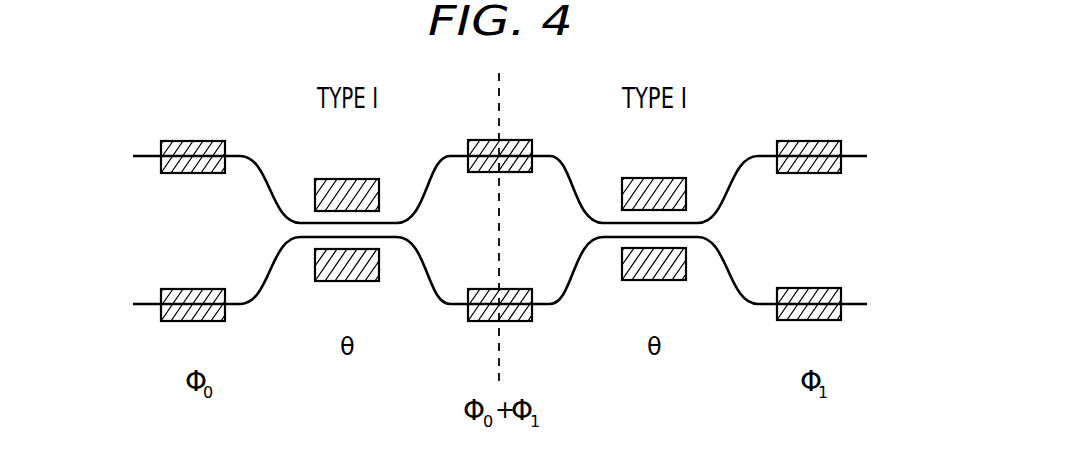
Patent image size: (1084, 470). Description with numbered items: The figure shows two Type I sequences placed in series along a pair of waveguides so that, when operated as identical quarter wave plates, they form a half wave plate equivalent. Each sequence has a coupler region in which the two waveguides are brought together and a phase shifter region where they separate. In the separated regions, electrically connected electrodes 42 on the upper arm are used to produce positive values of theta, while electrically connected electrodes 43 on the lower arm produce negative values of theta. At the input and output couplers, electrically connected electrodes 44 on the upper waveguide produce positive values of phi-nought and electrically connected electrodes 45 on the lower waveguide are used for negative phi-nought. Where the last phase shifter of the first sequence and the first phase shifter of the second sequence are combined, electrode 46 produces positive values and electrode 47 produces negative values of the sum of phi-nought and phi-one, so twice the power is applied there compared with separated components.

The electrodes 42 is at (325, 179).
The electrodes 43 is at (358, 281).
The electrodes 44 is at (180, 141).
The electrodes 45 is at (206, 321).
The electrode 46 is at (514, 140).
The electrode 47 is at (485, 320).